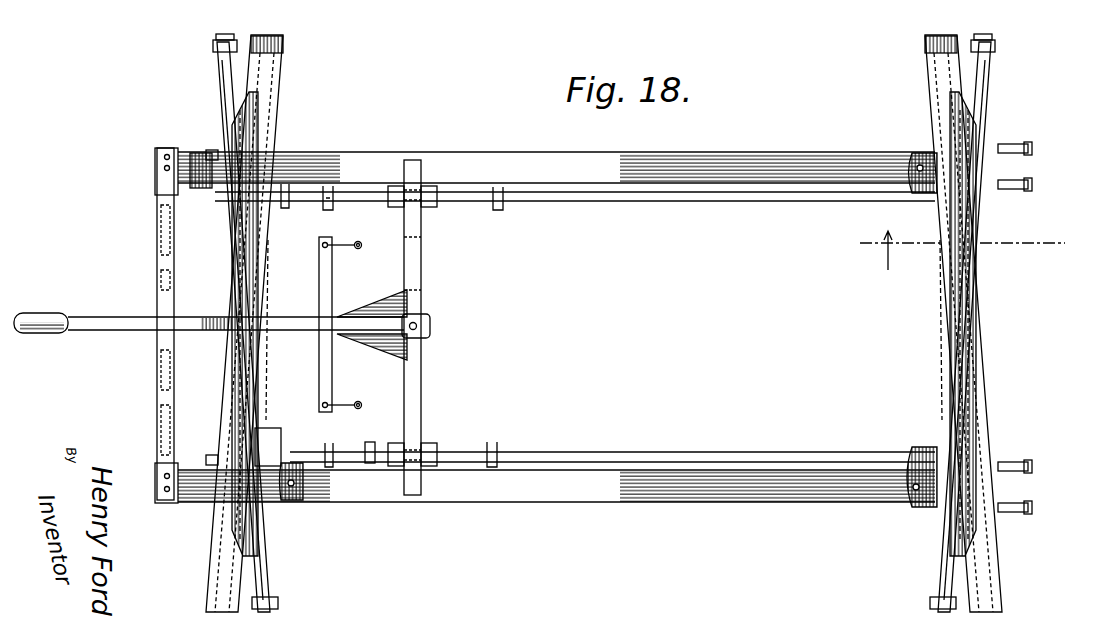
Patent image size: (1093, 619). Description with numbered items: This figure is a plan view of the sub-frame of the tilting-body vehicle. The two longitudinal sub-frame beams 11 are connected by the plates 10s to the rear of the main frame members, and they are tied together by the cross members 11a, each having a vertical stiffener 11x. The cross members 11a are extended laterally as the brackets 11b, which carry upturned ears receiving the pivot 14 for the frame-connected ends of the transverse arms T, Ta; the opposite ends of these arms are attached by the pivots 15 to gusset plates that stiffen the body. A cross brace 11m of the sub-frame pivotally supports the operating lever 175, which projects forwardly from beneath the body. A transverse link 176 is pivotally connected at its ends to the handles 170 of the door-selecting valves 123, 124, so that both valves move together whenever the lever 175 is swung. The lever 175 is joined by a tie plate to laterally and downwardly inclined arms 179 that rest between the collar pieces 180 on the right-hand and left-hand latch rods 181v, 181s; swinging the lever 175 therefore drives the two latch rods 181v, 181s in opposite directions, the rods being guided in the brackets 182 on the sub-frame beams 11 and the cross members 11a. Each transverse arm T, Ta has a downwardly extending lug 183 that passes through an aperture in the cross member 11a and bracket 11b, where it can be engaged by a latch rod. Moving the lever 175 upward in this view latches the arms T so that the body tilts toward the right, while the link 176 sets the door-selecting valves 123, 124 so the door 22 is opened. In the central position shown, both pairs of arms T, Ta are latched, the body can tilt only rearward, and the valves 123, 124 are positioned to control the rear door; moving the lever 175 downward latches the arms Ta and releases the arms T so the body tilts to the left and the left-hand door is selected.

The sub-frame beam 11 is at (545, 160).
The cross member 11a is at (235, 296).
The bracket 11b is at (246, 123).
The cross brace 11m is at (414, 282).
The vertical stiffener 11x is at (962, 297).
The pivot 14 is at (284, 48).
The pivot 15 is at (213, 46).
The plate 10s is at (214, 150).
The door 22 is at (961, 250).
The door-selecting valve 123 is at (361, 405).
The door-selecting valve 124 is at (362, 245).
The handle 170 is at (340, 250).
The operating lever 175 is at (86, 316).
The transverse link 176 is at (322, 286).
The arm 179 is at (420, 242).
The collar piece 180 is at (395, 207).
The latch rod 181s is at (702, 204).
The latch rod 181v is at (676, 452).
The bracket 182 is at (288, 206).
The lug 183 is at (214, 212).
The transverse arm T is at (220, 388).
The transverse arm Ta is at (270, 376).